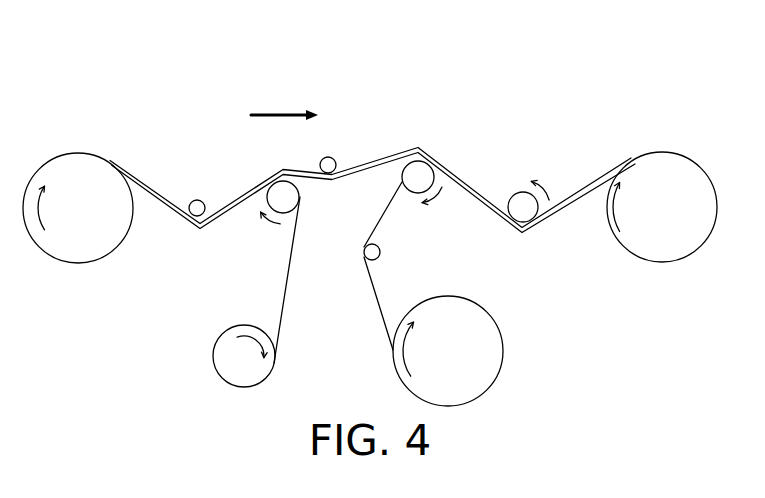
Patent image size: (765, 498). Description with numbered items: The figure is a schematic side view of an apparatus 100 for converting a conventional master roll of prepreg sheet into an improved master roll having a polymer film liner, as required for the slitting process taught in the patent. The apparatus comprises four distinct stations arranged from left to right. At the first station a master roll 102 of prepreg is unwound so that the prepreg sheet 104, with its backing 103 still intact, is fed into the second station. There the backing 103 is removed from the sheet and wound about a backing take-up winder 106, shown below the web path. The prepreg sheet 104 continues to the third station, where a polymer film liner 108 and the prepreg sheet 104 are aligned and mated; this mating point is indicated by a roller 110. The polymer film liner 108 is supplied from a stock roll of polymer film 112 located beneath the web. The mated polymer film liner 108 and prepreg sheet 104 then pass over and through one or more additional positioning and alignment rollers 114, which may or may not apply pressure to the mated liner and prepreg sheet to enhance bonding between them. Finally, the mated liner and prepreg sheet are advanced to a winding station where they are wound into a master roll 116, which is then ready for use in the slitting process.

The apparatus 100 is at (460, 85).
The master roll 102 is at (88, 264).
The backing 103 is at (166, 212).
The prepreg sheet 104 is at (162, 188).
The backing take-up winder 106 is at (212, 347).
The polymer film liner 108 is at (373, 285).
The roller 110 is at (420, 150).
The stock roll of polymer film 112 is at (503, 356).
The positioning and alignment rollers 114 is at (524, 191).
The master roll 116 is at (689, 259).